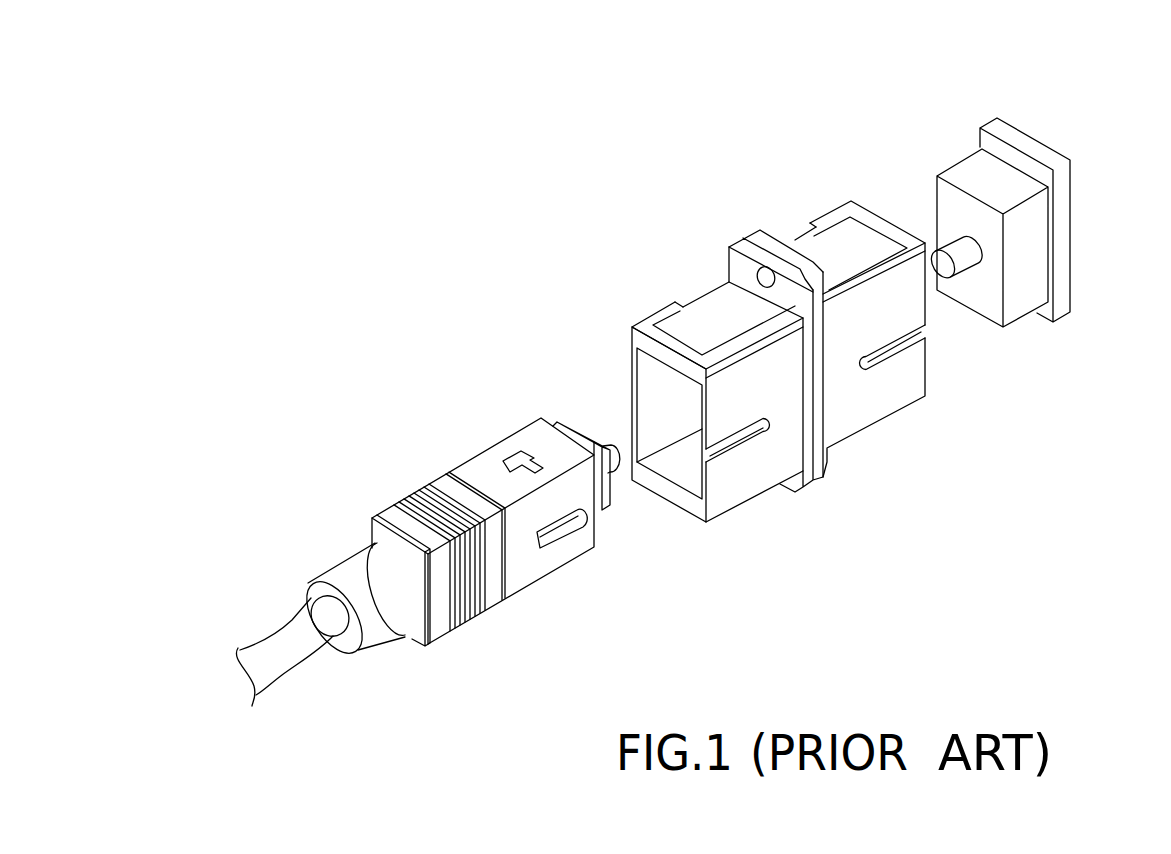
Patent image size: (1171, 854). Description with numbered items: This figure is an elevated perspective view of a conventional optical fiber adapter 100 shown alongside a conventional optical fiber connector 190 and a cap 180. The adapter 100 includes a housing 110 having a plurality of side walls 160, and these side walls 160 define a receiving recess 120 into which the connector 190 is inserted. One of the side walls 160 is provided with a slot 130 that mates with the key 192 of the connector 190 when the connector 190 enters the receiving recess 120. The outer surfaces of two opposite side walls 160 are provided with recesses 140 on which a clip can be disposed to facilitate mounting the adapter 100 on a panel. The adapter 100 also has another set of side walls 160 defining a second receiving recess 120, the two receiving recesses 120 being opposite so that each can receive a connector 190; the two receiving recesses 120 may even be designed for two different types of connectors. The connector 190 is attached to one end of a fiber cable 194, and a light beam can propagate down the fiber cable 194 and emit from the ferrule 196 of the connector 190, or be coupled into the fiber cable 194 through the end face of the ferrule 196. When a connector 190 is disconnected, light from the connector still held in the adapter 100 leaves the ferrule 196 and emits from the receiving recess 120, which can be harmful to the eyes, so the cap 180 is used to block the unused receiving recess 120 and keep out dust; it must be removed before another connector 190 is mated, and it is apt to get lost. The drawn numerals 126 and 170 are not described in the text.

The fiber adapter 100 is at (688, 148).
The housing 110 is at (625, 298).
The receiving recess 120 is at (665, 492).
The connector receiving opening 126 is at (640, 342).
The slot 130 is at (748, 418).
The recess 140 is at (727, 303).
The side wall 160 is at (893, 220).
The key notch 170 is at (682, 284).
The cap 180 is at (1061, 129).
The connector 190 is at (394, 448).
The key 192 is at (557, 533).
The fiber cable 194 is at (295, 633).
The ferrule 196 is at (608, 446).